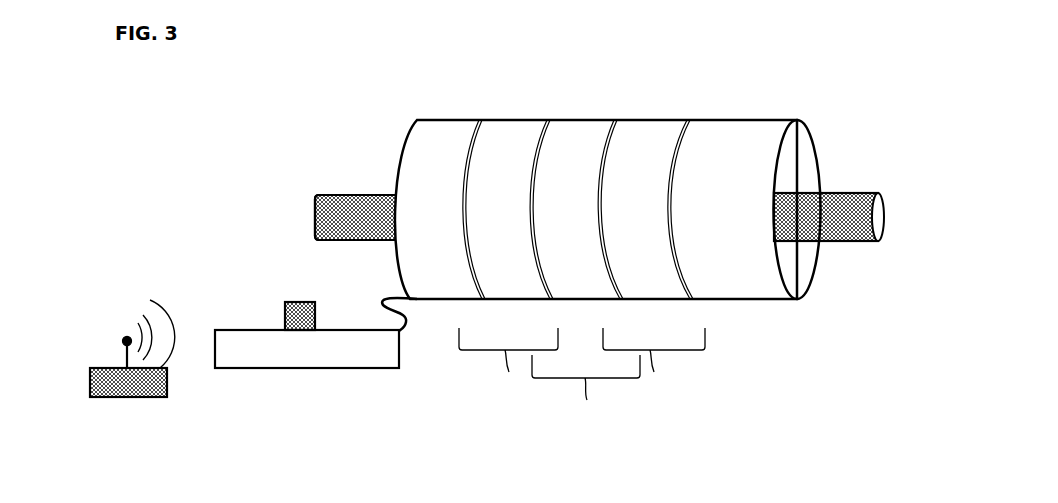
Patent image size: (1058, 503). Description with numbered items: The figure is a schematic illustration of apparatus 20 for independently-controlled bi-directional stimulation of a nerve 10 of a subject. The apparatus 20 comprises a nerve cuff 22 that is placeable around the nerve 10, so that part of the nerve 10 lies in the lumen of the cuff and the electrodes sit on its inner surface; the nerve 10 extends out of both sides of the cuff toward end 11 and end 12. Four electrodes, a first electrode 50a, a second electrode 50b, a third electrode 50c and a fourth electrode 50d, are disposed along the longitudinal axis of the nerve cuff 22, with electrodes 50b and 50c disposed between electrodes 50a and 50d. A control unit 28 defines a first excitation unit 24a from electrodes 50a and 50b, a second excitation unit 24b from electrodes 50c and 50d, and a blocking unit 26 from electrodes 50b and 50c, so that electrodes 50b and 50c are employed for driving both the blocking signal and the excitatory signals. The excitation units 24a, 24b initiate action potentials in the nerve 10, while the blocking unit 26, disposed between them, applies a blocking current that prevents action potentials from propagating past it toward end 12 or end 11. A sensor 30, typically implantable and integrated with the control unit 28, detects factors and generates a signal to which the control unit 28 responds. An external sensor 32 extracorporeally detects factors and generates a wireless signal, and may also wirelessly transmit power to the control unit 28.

The nerve 10 is at (330, 194).
The end of nerve 11 is at (283, 217).
The end of nerve 12 is at (879, 217).
The apparatus 20 is at (645, 151).
The nerve cuff 22 is at (770, 118).
The excitation unit 24a is at (508, 365).
The excitation unit 24b is at (654, 365).
The blocking unit 26 is at (586, 388).
The control unit 28 is at (399, 350).
The sensor 30 is at (285, 303).
The external sensor 32 is at (90, 370).
The first electrode 50a is at (471, 136).
The second electrode 50b is at (540, 136).
The third electrode 50c is at (607, 136).
The fourth electrode 50d is at (680, 136).